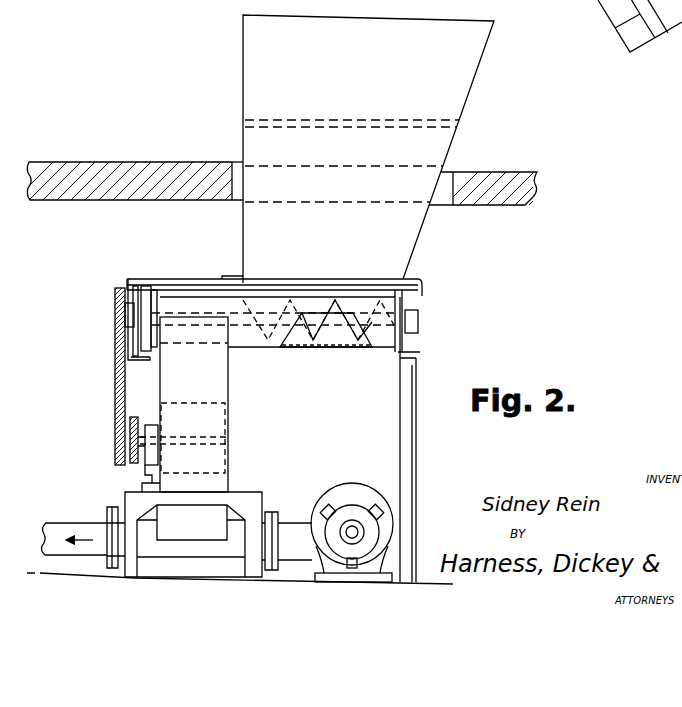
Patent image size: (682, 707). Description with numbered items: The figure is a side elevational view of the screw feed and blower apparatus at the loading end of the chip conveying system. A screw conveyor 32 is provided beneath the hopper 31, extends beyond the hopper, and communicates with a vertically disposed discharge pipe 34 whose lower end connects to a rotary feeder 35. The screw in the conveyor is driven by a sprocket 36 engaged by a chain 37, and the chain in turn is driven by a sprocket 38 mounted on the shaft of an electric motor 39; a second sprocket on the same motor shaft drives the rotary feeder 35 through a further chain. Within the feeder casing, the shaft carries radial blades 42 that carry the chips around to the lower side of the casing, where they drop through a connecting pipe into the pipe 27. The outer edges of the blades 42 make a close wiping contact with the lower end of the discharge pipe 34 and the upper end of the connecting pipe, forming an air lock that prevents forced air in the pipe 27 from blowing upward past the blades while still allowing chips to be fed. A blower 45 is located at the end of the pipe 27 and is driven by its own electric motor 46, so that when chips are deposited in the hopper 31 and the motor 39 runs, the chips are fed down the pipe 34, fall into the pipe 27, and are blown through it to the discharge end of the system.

The hopper 31 is at (403, 248).
The screw conveyor 32 is at (322, 346).
The discharge pipe 34 is at (233, 375).
The rotary feeder 35 is at (236, 420).
The sprocket 36 is at (118, 344).
The chain 37 is at (115, 394).
The sprocket 38 is at (128, 441).
The electric motor 39 is at (143, 471).
The radial blades 42 is at (232, 447).
The blower 45 is at (346, 487).
The electric motor 46 is at (372, 518).
The pipe 27 is at (53, 528).